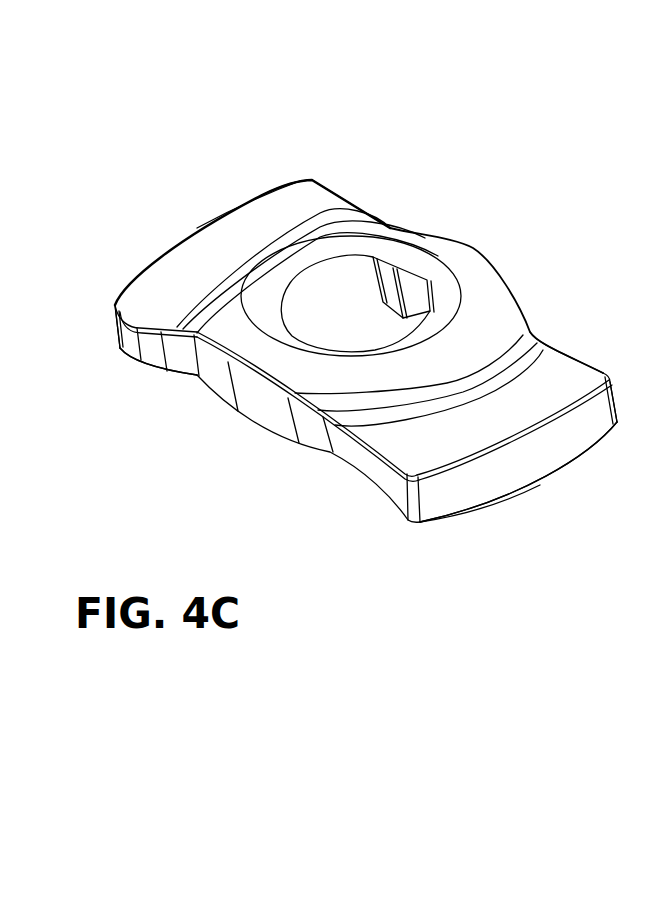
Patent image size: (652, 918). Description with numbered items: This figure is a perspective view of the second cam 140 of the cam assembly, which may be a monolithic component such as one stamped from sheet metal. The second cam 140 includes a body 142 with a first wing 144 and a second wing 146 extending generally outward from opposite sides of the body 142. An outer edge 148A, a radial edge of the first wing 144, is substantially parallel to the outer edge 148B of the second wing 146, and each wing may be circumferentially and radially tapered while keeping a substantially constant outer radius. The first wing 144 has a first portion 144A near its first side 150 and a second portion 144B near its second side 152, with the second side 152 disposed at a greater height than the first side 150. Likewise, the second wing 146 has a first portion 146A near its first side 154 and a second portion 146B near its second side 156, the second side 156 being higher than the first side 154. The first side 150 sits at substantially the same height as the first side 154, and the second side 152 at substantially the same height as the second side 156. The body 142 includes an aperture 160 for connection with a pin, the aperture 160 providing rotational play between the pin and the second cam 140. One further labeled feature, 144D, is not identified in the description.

The second cam 140 is at (432, 125).
The body 142 is at (473, 249).
The first wing 144 is at (522, 512).
The first portion of the first wing 144A is at (600, 425).
The second portion of the first wing 144B is at (455, 511).
The left side surface 144D is at (0, 101).
The second wing 146 is at (153, 212).
The first portion of the second wing 146A is at (140, 268).
The second portion of the second wing 146B is at (247, 197).
The outer edge of the first wing 148A is at (533, 458).
The outer edge of the second wing 148B is at (195, 230).
The first side of the first wing 150 is at (575, 352).
The second side of the first wing 152 is at (360, 458).
The first side of the second wing 154 is at (153, 353).
The second side of the second wing 156 is at (346, 197).
The aperture 160 is at (317, 327).